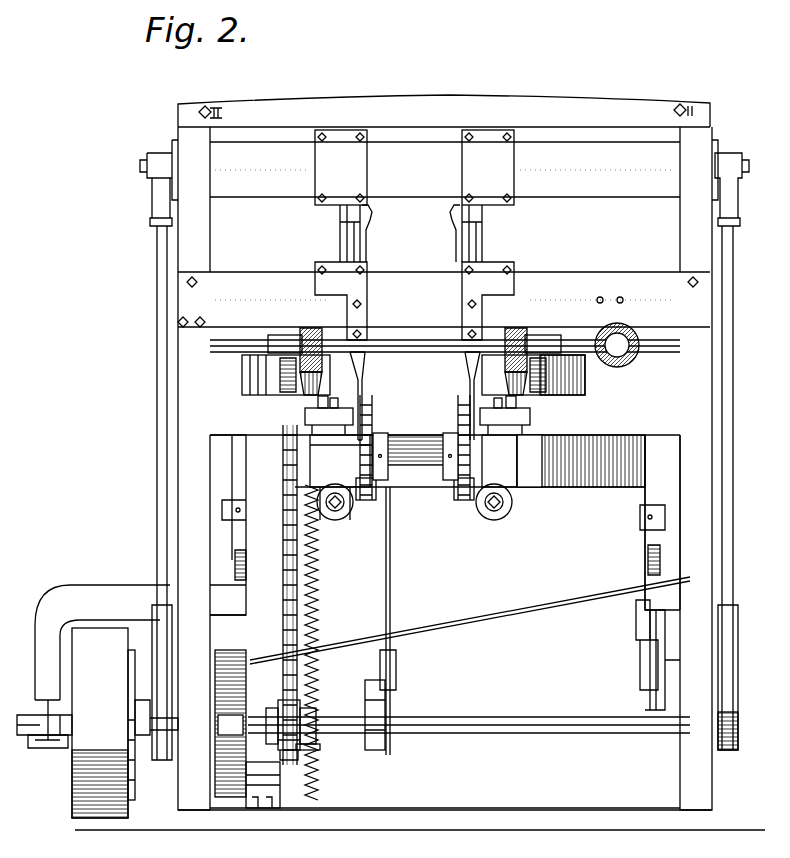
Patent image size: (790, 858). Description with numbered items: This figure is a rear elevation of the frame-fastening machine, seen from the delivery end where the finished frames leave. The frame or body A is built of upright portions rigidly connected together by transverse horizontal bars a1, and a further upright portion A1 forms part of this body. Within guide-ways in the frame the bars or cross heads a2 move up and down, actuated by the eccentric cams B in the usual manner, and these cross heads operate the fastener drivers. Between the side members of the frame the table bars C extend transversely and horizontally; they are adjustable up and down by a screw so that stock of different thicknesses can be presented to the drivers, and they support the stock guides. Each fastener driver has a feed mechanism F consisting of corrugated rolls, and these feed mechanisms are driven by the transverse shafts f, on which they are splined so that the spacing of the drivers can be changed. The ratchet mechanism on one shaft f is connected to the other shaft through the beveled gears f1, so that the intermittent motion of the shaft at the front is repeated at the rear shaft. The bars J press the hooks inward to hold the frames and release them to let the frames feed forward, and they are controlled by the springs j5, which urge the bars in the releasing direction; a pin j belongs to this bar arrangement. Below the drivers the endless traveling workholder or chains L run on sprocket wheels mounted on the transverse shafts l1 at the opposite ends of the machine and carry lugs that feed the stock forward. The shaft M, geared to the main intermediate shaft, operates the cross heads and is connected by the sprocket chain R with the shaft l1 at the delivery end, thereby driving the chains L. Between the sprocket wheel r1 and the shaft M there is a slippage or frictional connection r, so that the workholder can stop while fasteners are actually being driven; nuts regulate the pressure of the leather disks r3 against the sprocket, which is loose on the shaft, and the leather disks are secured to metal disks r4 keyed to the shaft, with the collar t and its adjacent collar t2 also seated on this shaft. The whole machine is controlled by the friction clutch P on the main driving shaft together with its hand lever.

The frame or body A is at (193, 543).
The frame upright A1 is at (712, 530).
The transverse horizontal bar a1 is at (265, 278).
The cross head a2 is at (565, 180).
The transverse shaft f is at (420, 350).
The beveled gear f1 is at (306, 338).
The feed mechanism F is at (275, 390).
The bar J is at (306, 416).
The pin j is at (320, 408).
The spring j5 is at (330, 402).
The endless traveling workholder or chain L is at (372, 440).
The transverse shaft l1 is at (410, 460).
The table bar C is at (252, 566).
The sprocket chain R is at (283, 618).
The shaft M is at (490, 718).
The slippage or frictional connection r is at (278, 712).
The sprocket wheel r1 is at (292, 760).
The leather disk r3 is at (268, 716).
The metal disk r4 is at (270, 744).
The sprocket t is at (318, 712).
The collar t2 is at (320, 748).
The friction clutch P is at (72, 768).
The eccentric cam B is at (165, 630).